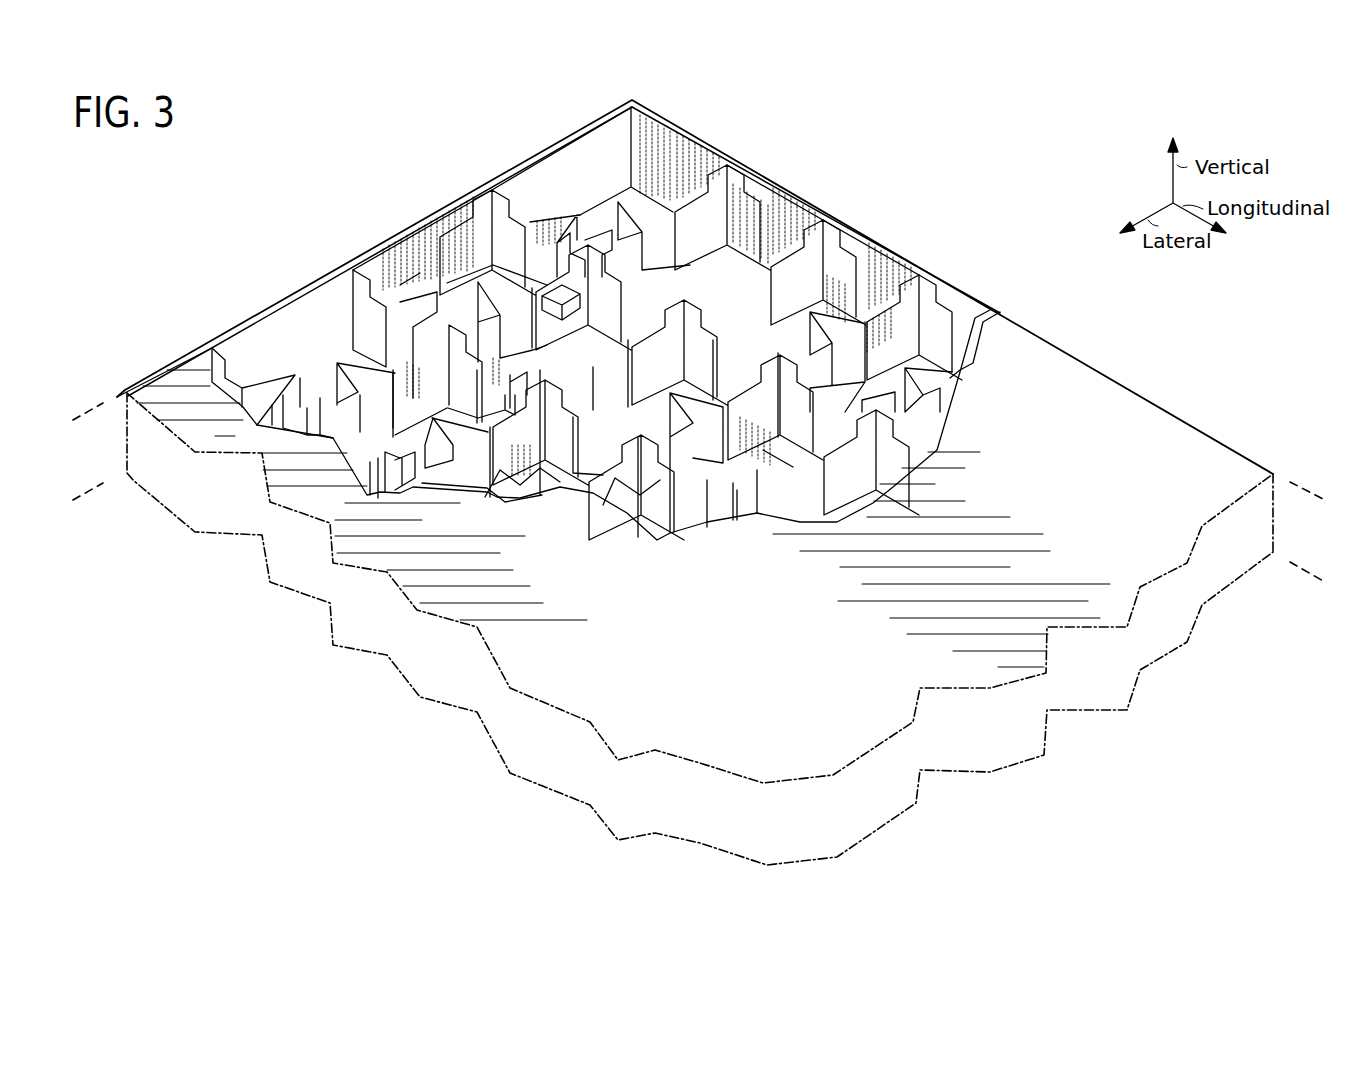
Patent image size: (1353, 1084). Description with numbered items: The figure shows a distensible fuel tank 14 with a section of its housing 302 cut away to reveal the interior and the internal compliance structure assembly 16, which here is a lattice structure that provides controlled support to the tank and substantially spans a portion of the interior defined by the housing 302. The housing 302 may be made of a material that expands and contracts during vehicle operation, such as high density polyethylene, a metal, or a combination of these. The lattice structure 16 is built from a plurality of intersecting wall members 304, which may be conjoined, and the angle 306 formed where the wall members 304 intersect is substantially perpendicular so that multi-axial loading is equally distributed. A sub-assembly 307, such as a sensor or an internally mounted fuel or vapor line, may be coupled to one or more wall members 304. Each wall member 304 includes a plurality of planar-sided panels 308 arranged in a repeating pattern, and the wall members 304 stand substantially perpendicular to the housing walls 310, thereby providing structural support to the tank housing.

The distensible fuel tank 14 is at (368, 164).
The compliance structure assembly 16 is at (666, 163).
The housing 302 is at (510, 170).
The wall members 304 is at (400, 290).
The angle 306 is at (557, 426).
The sub-assembly 307 is at (577, 304).
The panels 308 is at (905, 272).
The housing walls 310 is at (446, 232).